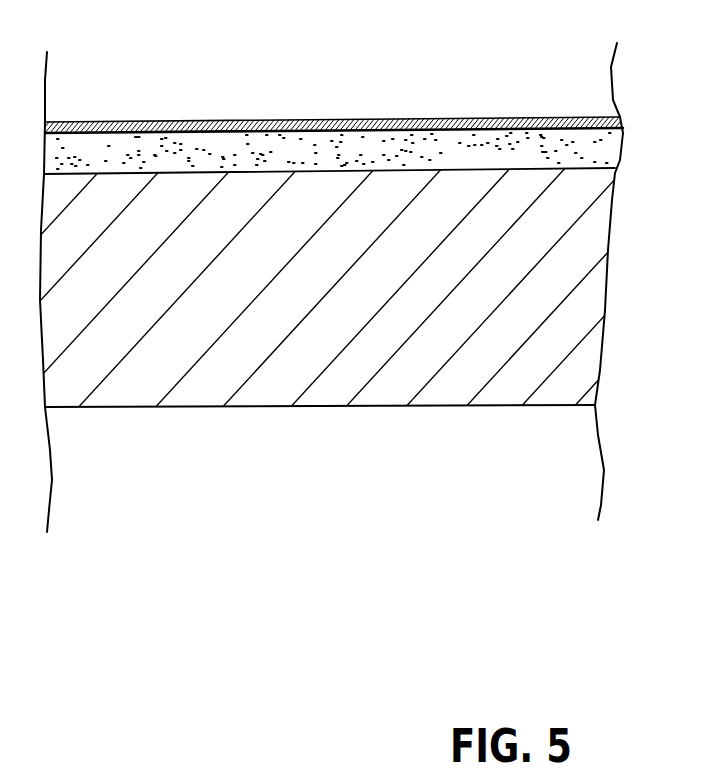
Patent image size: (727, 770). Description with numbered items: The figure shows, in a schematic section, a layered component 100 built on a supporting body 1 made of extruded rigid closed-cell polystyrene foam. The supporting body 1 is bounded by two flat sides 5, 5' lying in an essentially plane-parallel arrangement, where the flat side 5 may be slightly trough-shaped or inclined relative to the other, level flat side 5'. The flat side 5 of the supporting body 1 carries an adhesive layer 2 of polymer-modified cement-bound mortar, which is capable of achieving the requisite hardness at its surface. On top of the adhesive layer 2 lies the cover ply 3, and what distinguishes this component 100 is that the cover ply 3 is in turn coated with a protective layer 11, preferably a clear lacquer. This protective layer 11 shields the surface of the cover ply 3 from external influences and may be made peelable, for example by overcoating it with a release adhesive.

The component 100 is at (261, 486).
The supporting body 1 is at (336, 388).
The adhesive layer 2 is at (387, 147).
The cover ply 3 is at (468, 119).
The flat side 5 is at (329, 98).
The flat side 5' is at (320, 495).
The protective layer 11 is at (104, 122).